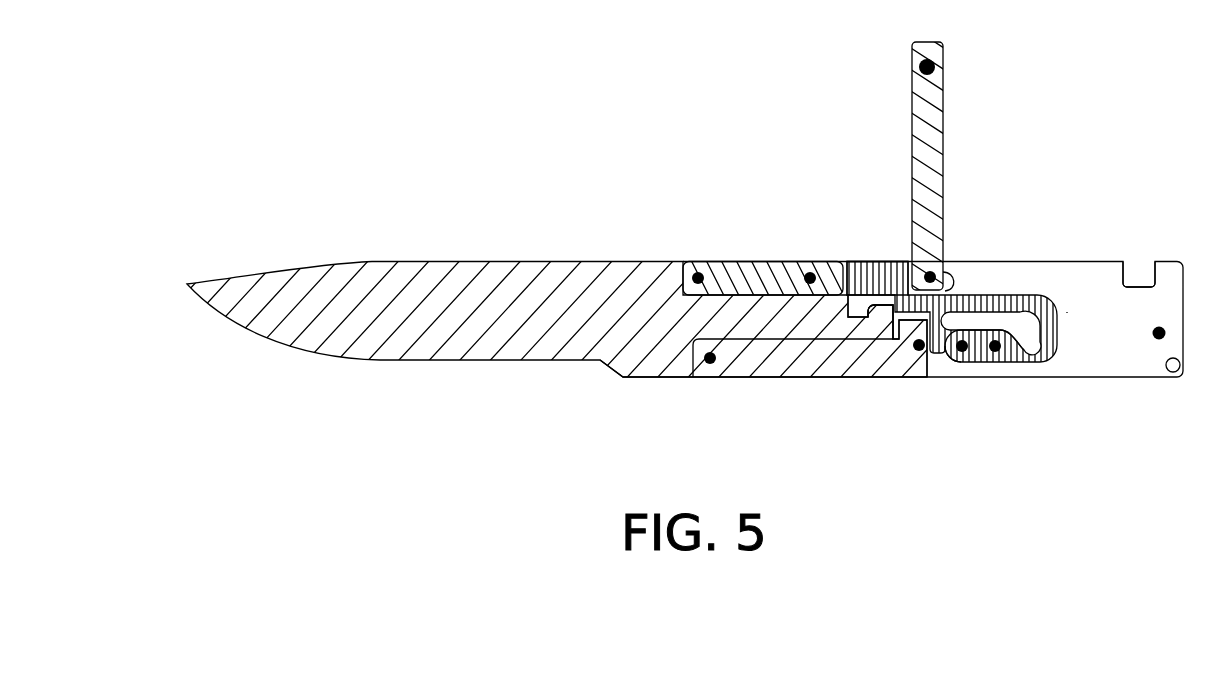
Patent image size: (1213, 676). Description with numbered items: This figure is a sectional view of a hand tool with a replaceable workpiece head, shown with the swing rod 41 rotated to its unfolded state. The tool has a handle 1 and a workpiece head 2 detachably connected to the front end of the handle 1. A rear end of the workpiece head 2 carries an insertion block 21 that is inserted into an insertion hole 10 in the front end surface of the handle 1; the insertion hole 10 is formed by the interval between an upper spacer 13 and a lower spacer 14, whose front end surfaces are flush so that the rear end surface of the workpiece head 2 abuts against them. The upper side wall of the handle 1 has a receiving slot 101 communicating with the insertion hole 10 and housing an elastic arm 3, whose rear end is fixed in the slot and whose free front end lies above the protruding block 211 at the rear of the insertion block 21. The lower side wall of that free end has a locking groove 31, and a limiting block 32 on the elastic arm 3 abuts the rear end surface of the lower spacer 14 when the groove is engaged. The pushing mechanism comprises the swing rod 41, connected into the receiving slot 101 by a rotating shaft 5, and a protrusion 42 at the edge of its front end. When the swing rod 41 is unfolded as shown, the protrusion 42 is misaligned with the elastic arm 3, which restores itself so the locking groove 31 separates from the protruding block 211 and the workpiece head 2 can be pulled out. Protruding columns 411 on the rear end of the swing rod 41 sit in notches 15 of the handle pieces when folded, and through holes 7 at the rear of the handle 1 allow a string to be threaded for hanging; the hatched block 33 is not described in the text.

The handle 1 is at (1073, 377).
The workpiece head 2 is at (617, 272).
The elastic arm 3 is at (987, 297).
The rotating shaft 5 is at (920, 268).
The through holes 7 is at (1172, 373).
The insertion hole 10 is at (785, 270).
The upper spacer 13 is at (737, 270).
The lower spacer 14 is at (748, 370).
The notches 15 is at (1138, 278).
The insertion block 21 is at (790, 325).
The locking groove 31 is at (887, 268).
The limiting block 32 is at (942, 355).
The spring seat 33 is at (982, 360).
The swing rod 41 is at (933, 126).
The protrusion 42 is at (952, 283).
The receiving slot 101 is at (1067, 312).
The protruding block 211 is at (885, 330).
The protruding column 411 is at (937, 66).